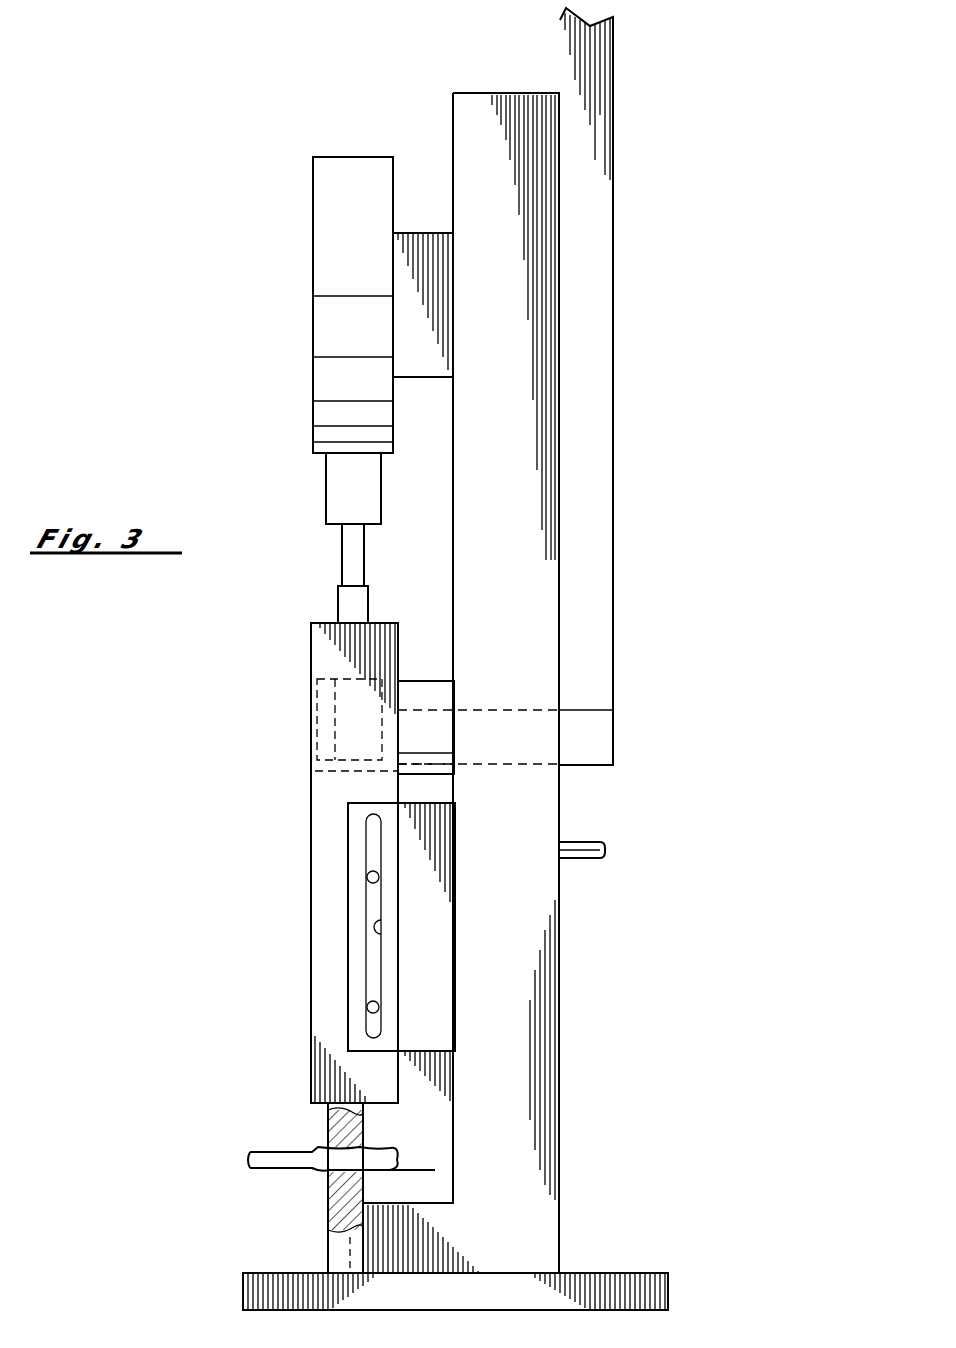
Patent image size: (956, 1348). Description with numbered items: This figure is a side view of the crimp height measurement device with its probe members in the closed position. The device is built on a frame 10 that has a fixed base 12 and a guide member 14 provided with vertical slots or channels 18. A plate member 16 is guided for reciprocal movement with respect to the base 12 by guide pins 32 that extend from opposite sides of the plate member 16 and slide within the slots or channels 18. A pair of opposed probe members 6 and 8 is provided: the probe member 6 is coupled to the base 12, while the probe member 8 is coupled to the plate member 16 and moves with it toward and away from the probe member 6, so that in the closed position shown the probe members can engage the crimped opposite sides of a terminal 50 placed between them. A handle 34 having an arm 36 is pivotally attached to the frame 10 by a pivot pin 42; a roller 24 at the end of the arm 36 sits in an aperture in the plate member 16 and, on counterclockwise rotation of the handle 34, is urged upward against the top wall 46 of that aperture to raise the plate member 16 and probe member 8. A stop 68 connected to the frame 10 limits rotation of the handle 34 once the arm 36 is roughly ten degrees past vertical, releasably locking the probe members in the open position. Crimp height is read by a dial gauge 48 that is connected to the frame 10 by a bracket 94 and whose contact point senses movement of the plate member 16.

The probe member 6 is at (330, 1195).
The probe member 8 is at (328, 1132).
The frame 10 is at (493, 118).
The fixed base 12 is at (510, 1252).
The guide member 14 is at (440, 1030).
The plate member 16 is at (318, 641).
The vertical slots or channels 18 is at (372, 927).
The roller 24 is at (345, 728).
The guide pins 32 is at (370, 873).
The handle 34 is at (596, 187).
The arm 36 is at (413, 775).
The pivot pin 42 is at (507, 710).
The top wall 46 is at (311, 699).
The dial gauge 48 is at (313, 228).
The terminal 50 is at (378, 1158).
The stop 68 is at (592, 857).
The bracket 94 is at (432, 233).